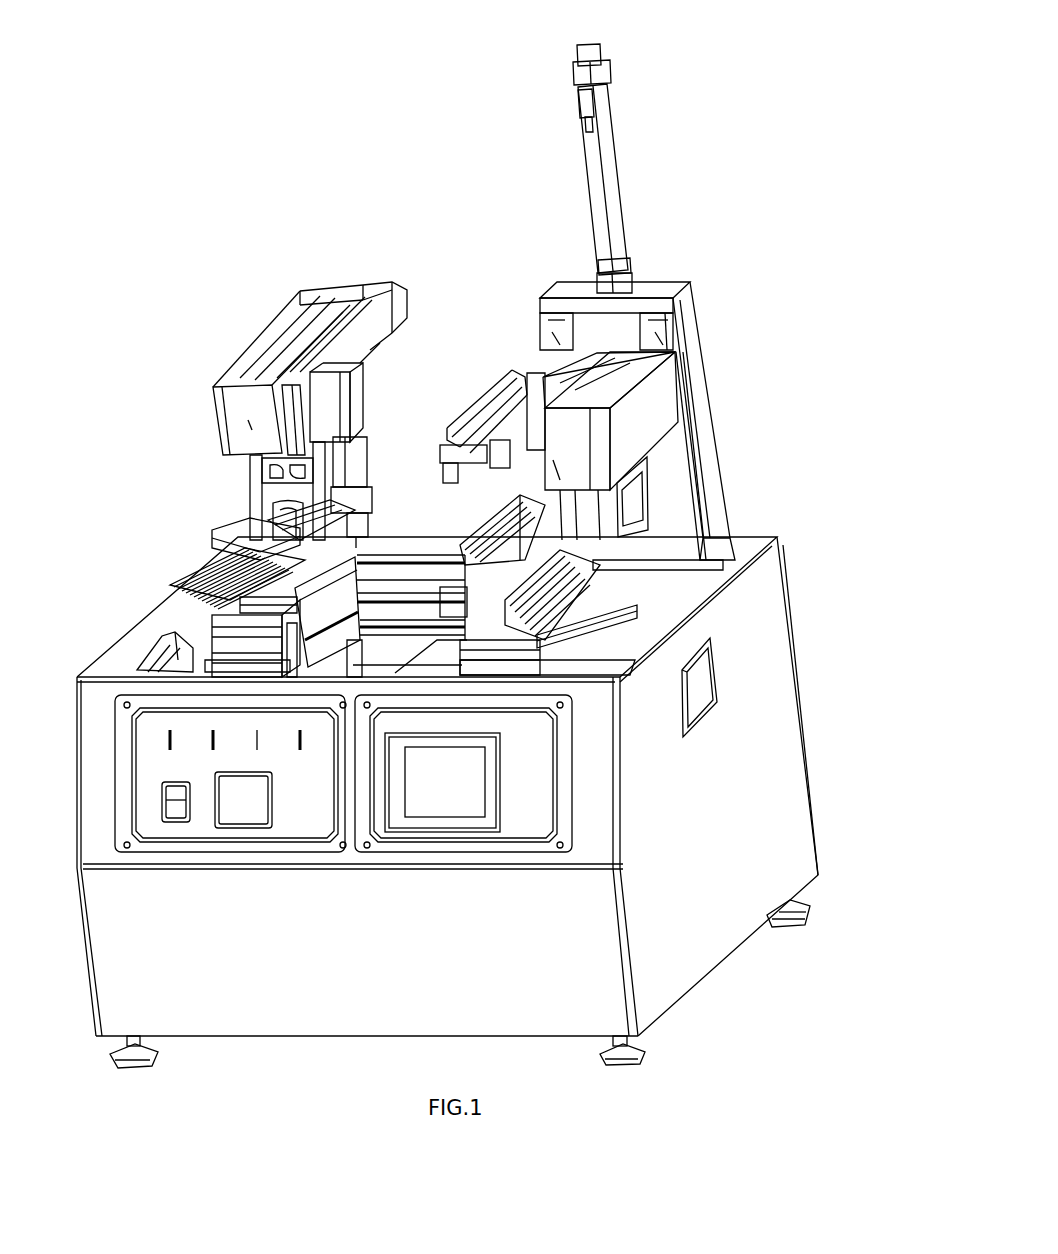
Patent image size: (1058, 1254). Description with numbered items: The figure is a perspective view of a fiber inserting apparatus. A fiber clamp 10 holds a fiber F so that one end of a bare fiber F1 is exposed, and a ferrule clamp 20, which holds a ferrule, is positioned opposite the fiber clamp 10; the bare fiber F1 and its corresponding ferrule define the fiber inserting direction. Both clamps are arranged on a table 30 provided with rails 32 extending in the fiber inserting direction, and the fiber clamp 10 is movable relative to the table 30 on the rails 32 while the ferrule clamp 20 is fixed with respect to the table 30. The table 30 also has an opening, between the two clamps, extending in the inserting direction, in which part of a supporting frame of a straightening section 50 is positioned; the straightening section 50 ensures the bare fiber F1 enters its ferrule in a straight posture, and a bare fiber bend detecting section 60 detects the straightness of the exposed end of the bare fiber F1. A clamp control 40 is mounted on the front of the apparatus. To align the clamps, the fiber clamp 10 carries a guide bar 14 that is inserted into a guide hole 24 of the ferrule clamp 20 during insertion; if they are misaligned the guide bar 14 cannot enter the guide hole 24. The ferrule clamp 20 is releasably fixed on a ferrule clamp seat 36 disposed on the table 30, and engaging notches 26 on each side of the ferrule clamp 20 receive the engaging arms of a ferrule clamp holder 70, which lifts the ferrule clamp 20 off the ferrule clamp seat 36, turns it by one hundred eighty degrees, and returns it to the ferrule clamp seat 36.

The fiber clamp 10 is at (257, 608).
The guide bar 14 is at (240, 537).
The fiber F is at (187, 570).
The bare fiber F1 is at (280, 532).
The ferrule clamp 20 is at (603, 568).
The guide hole 24 is at (468, 550).
The engaging notch 26 is at (592, 632).
The table 30 is at (95, 717).
The rails 32 is at (402, 677).
The ferrule clamp seat 36 is at (583, 602).
The clamp control 40 is at (315, 780).
The straightening section 50 is at (343, 618).
The bare fiber bend detecting section 60 is at (360, 407).
The ferrule clamp holder 70 is at (537, 245).